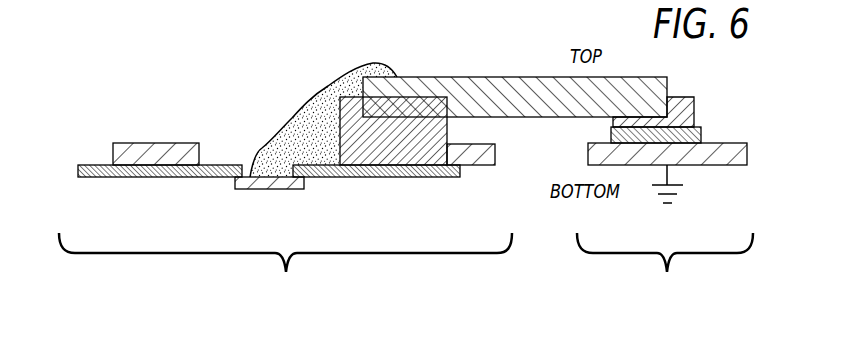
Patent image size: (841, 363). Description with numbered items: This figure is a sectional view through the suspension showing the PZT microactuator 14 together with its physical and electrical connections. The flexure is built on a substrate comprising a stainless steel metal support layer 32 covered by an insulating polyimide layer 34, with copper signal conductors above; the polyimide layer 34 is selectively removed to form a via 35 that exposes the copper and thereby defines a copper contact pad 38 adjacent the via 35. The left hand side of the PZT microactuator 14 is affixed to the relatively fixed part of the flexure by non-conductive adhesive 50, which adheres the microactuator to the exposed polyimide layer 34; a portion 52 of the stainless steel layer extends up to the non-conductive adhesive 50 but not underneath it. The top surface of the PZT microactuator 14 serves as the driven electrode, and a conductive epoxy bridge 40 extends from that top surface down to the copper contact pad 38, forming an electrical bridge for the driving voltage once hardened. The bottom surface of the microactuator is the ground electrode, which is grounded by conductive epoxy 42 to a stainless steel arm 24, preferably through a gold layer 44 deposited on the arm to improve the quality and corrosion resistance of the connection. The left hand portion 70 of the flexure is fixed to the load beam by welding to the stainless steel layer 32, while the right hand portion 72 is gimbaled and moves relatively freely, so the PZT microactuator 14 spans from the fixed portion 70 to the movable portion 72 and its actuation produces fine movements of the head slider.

The PZT microactuator 14 is at (537, 77).
The stainless steel arm 24 is at (748, 153).
The stainless steel metal support layer 32 is at (104, 150).
The insulating layer 34 is at (103, 178).
The via 35 is at (250, 168).
The copper contact pad 38 is at (268, 190).
The conductive epoxy bridge 40 is at (330, 92).
The conductive epoxy 42 is at (697, 112).
The gold layer 44 is at (703, 138).
The non-conductive adhesive 50 is at (448, 133).
The portion of stainless steel layer 52 is at (497, 152).
The left hand portion of flexure 70 is at (285, 269).
The right hand portion of flexure 72 is at (665, 269).